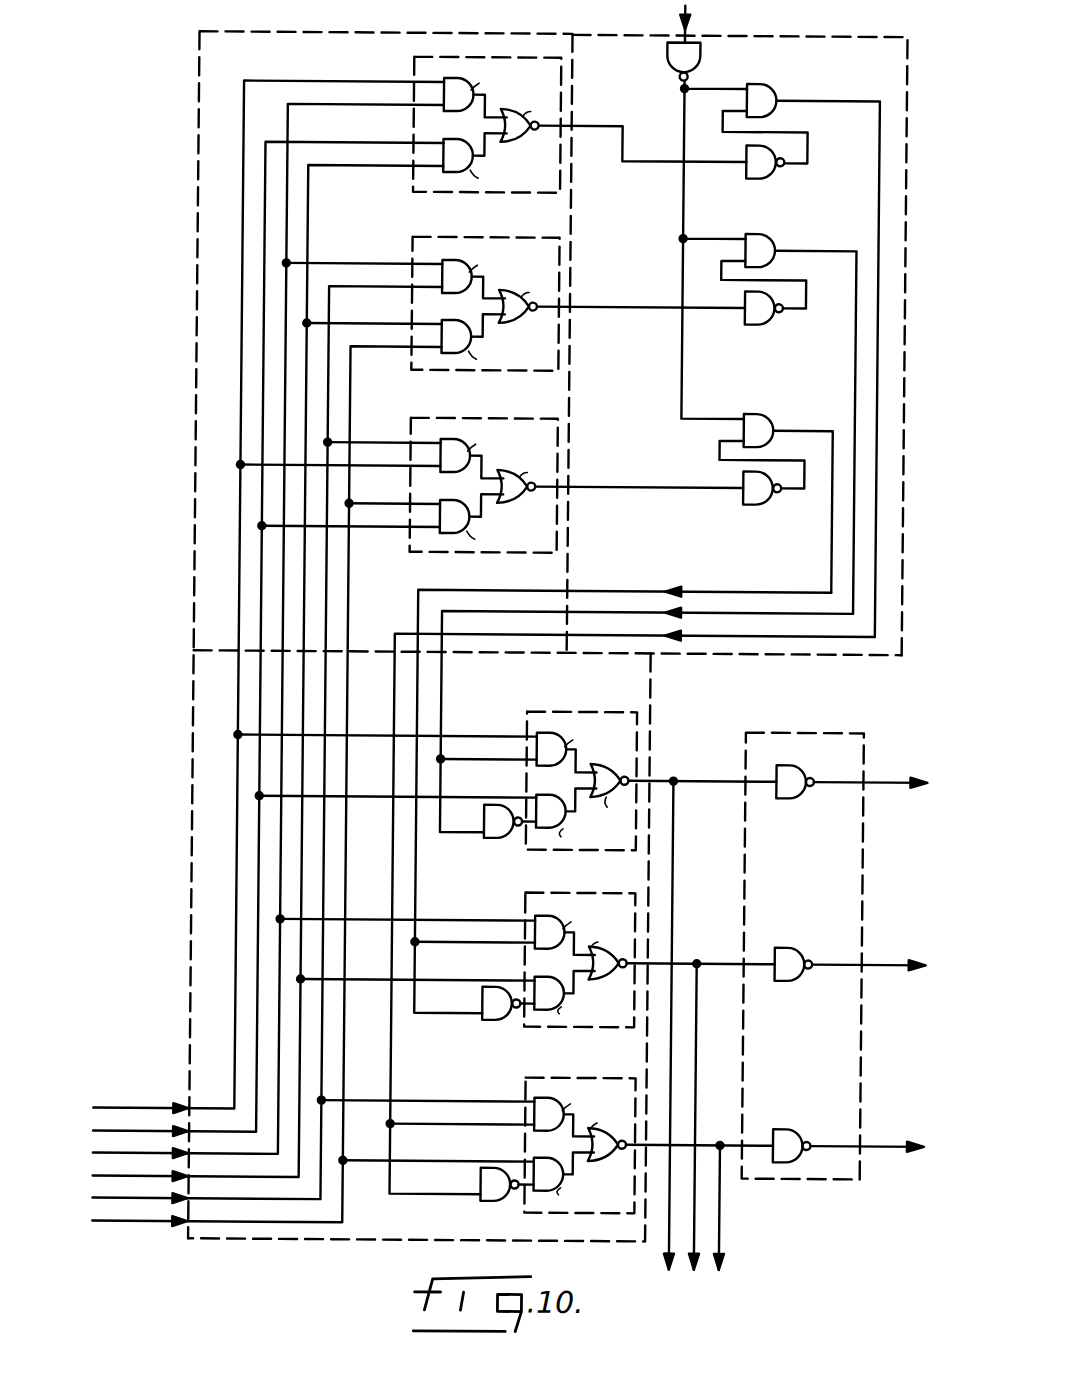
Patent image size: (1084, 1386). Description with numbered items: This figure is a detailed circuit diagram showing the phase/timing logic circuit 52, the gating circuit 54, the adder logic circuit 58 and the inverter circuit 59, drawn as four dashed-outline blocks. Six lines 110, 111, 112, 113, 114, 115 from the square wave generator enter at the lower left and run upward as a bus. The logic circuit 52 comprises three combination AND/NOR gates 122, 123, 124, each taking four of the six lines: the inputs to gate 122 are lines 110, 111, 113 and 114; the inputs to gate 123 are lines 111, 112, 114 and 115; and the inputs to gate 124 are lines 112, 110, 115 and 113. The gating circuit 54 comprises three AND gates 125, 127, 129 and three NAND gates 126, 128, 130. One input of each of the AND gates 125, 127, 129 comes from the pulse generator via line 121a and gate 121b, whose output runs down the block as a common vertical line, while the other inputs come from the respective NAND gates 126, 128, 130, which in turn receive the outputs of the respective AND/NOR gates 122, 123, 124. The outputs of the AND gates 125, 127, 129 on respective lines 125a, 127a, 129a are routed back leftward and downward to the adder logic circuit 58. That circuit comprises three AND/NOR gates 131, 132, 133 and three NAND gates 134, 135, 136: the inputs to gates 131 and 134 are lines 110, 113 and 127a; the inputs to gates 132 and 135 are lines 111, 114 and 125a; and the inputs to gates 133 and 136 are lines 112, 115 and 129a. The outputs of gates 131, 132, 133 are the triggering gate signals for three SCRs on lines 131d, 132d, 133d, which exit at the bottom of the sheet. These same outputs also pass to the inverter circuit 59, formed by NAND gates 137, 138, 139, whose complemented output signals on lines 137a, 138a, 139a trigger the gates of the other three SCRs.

The phase/timing logic circuit 52 is at (197, 83).
The gating circuit 54 is at (858, 653).
The adder logic circuit 58 is at (282, 1242).
The inverter circuit 59 is at (830, 1178).
The line 110 is at (101, 1110).
The line 111 is at (101, 1155).
The line 112 is at (101, 1200).
The line 113 is at (101, 1133).
The line 114 is at (101, 1178).
The line 115 is at (130, 1223).
The line 121a is at (682, 12).
The gate 121b is at (665, 60).
The combination AND/NOR gate 122 is at (411, 58).
The combination AND/NOR gate 123 is at (528, 237).
The combination AND/NOR gate 124 is at (470, 418).
The AND gate 125 is at (760, 82).
The line 125a is at (752, 590).
The NAND gate 126 is at (764, 177).
The AND gate 127 is at (745, 232).
The line 127a is at (458, 611).
The NAND gate 128 is at (748, 322).
The AND gate 129 is at (745, 412).
The line 129a is at (410, 634).
The NAND gate 130 is at (748, 503).
The AND/NOR gate 131 is at (637, 711).
The line 131d is at (679, 823).
The AND/NOR gate 132 is at (625, 892).
The line 132d is at (704, 1040).
The AND/NOR gate 133 is at (613, 1077).
The line 133d is at (728, 1242).
The NAND gate 134 is at (495, 839).
The NAND gate 135 is at (495, 1020).
The NAND gate 136 is at (495, 1201).
The NAND gate 137 is at (787, 797).
The line 137a is at (884, 779).
The NAND gate 138 is at (789, 979).
The line 138a is at (887, 962).
The NAND gate 139 is at (793, 1127).
The line 139a is at (879, 1143).